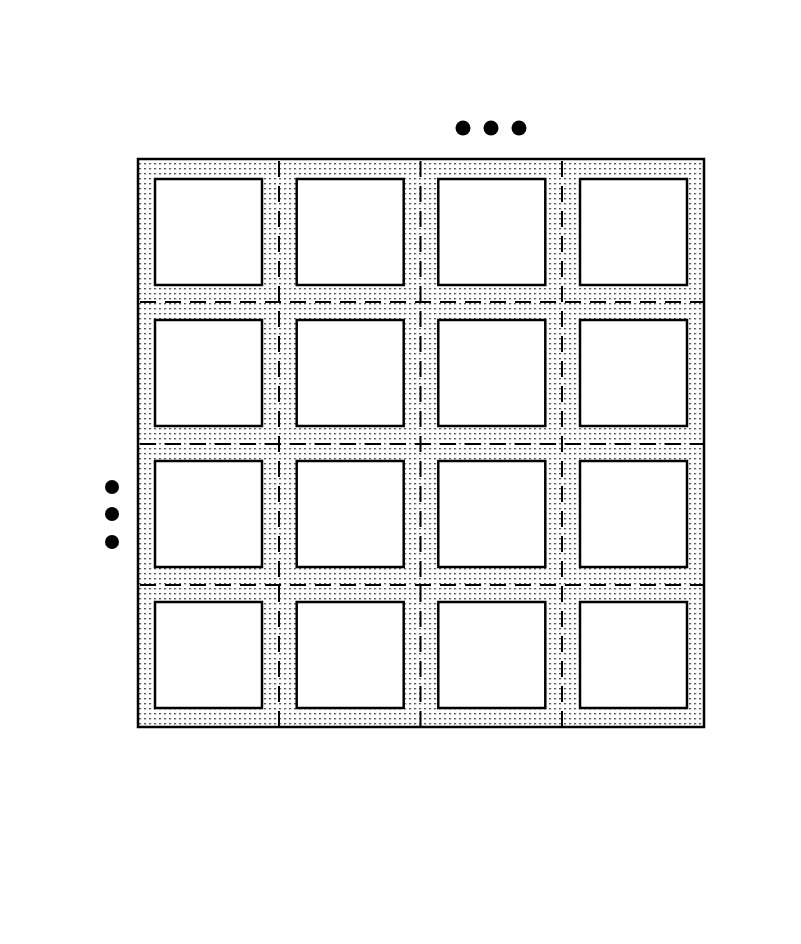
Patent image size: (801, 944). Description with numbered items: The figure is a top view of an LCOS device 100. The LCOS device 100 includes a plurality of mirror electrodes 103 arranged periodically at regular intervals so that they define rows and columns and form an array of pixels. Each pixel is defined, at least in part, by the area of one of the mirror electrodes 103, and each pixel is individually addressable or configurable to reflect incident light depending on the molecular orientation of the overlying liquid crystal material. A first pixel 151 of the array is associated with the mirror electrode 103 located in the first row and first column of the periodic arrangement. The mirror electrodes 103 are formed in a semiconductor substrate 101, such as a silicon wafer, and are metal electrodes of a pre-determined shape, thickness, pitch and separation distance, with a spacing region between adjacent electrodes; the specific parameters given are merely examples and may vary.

The LCOS device 100 is at (788, 66).
The semiconductor substrate 101 is at (140, 711).
The mirror electrodes 103 is at (421, 443).
The first pixel 151 is at (150, 172).